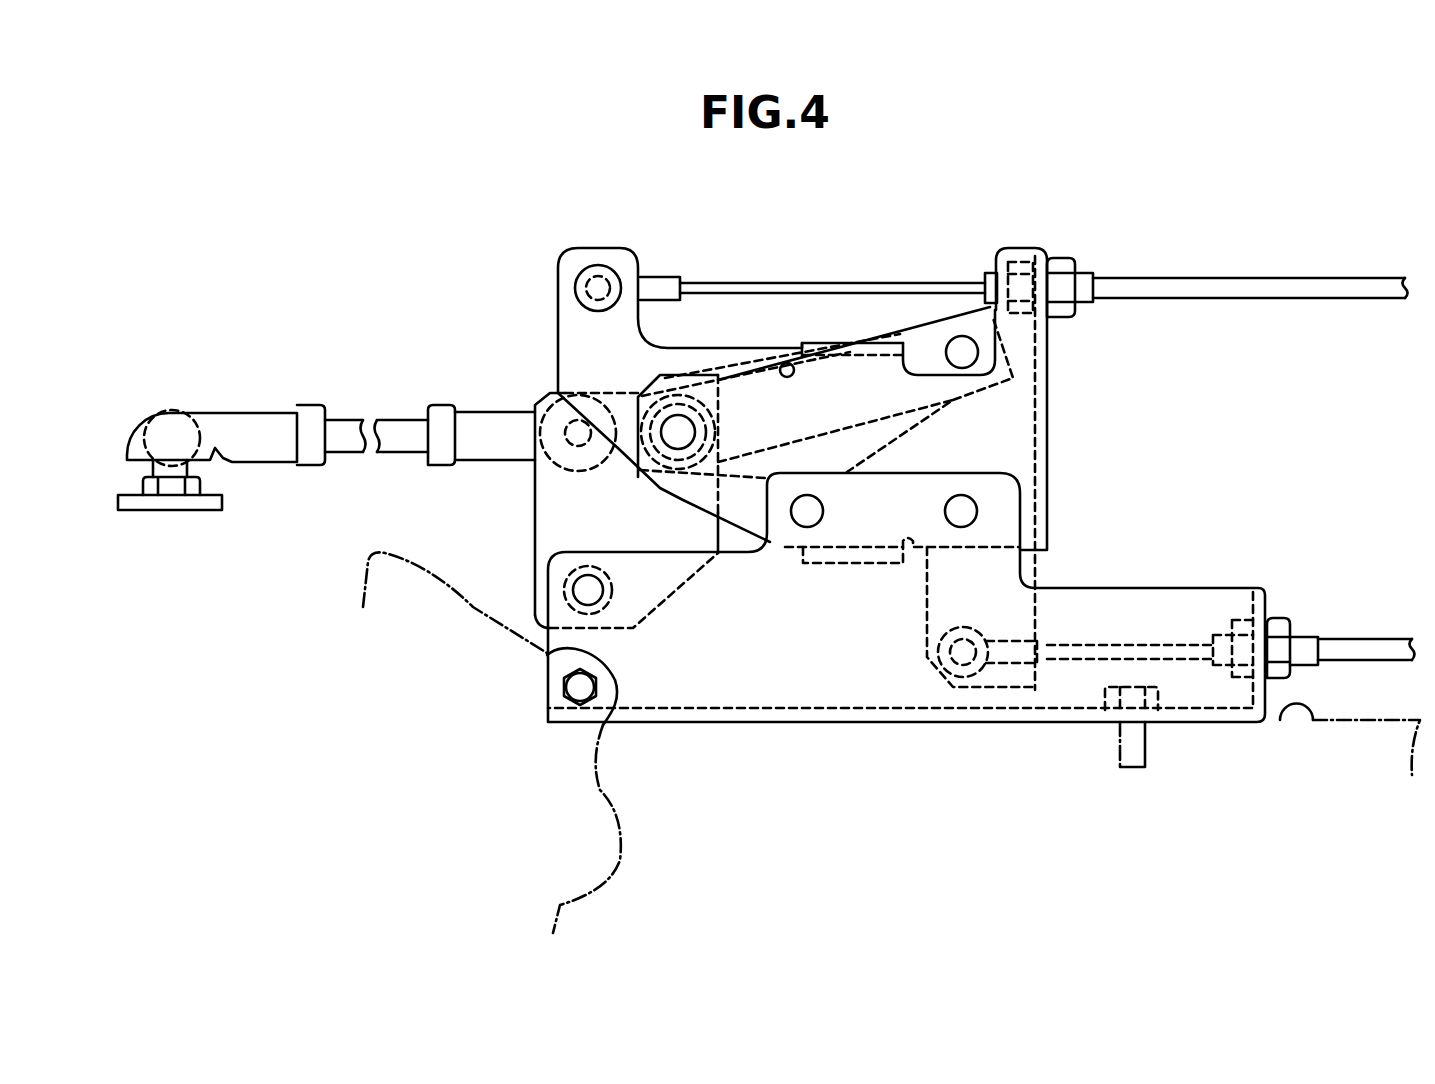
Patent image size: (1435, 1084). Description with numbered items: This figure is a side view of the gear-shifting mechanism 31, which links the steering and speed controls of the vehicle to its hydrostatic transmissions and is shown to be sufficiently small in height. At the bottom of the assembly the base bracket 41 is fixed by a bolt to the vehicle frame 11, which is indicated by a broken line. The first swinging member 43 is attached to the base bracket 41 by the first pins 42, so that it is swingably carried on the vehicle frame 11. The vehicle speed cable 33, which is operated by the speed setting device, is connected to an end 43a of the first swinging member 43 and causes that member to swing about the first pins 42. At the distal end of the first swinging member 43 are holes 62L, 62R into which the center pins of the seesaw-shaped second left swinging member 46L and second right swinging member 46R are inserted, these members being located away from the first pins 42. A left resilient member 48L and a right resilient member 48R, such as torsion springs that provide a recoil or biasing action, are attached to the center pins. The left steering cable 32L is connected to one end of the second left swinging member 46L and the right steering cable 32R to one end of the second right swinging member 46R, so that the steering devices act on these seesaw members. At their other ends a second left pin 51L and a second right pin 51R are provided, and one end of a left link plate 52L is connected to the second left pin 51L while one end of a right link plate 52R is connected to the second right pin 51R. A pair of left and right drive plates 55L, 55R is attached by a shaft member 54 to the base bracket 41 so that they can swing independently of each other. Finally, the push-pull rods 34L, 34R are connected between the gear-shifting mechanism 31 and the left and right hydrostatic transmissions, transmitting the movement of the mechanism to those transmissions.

The gear-shifting mechanism 31 is at (625, 204).
The left steering cable 32L is at (1227, 325).
The right steering cable 32R is at (1358, 300).
The vehicle speed cable 33 is at (1357, 641).
The left push-pull rod 34L is at (326, 363).
The right push-pull rod 34R is at (408, 422).
The base bracket 41 is at (823, 690).
The first pin 42 is at (966, 511).
The first swinging member 43 is at (998, 428).
The end of first swinging member 43a is at (1040, 612).
The second left swinging member 46L is at (676, 320).
The second right swinging member 46R is at (578, 348).
The left resilient member 48L is at (818, 281).
The right resilient member 48R is at (712, 380).
The second left pin 51L is at (960, 266).
The second right pin 51R is at (960, 348).
The left link plate 52L is at (916, 269).
The right link plate 52R is at (897, 333).
The shaft member 54 is at (580, 590).
The left drive plate 55L is at (531, 501).
The right drive plate 55R is at (532, 523).
The hole 62L is at (785, 354).
The hole 62R is at (676, 422).
The vehicle frame 11 is at (1313, 720).